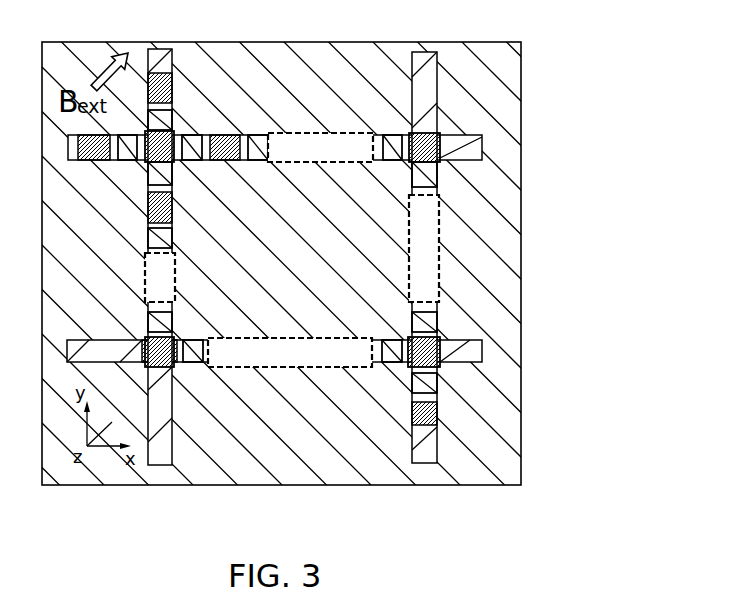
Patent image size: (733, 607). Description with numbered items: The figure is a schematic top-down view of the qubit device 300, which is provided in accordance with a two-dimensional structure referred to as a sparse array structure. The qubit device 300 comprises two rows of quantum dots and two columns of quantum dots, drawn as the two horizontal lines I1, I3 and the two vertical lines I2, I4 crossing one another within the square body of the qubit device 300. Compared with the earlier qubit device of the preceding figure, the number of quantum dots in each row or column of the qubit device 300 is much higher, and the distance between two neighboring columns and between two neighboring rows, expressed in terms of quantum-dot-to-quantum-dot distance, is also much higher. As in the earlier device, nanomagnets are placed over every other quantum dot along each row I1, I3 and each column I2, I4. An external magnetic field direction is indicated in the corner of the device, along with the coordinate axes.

The qubit device 300 is at (567, 56).
The first current line I1 is at (490, 349).
The second current line I2 is at (162, 470).
The third current line I3 is at (490, 145).
The fourth current line I4 is at (427, 470).